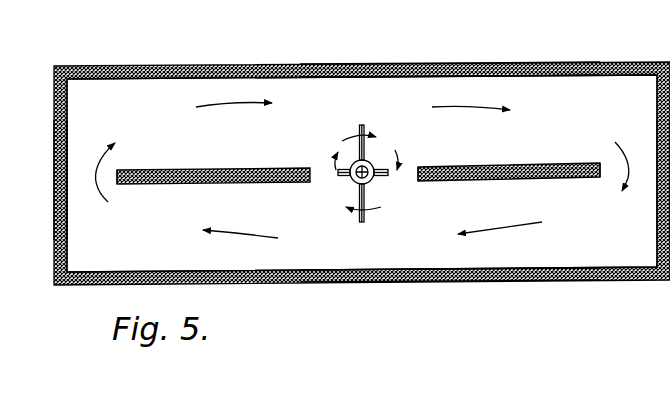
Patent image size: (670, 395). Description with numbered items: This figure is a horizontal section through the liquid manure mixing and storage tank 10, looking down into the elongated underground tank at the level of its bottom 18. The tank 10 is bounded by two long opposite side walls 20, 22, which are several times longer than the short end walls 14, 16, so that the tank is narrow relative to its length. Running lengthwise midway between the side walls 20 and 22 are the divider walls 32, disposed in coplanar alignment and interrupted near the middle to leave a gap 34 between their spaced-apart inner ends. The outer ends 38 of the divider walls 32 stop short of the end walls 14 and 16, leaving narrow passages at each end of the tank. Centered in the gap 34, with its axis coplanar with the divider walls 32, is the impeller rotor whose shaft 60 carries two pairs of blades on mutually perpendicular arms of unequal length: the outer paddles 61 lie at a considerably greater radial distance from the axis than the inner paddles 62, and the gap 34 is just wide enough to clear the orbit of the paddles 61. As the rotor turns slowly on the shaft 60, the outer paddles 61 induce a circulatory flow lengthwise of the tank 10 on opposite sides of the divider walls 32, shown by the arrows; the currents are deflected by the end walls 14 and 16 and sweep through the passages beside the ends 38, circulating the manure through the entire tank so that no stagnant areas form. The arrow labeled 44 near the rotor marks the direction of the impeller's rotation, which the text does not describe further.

The dryer housing 10 is at (508, 60).
The top wall 22 is at (550, 76).
The left side wall 14 is at (68, 224).
The right side wall 16 is at (657, 222).
The bottom wall 20 is at (424, 268).
The drying chamber 18 is at (498, 211).
The baffle plates 32 is at (240, 168).
The outer ends of baffle plates 38 is at (119, 173).
The inner end of baffle plate 34 is at (417, 181).
The rotor hub 60 is at (351, 182).
The vertical rotor blades 61 is at (364, 131).
The horizontal rotor blades 62 is at (343, 168).
The rotor / direction of rotation 44 is at (372, 160).